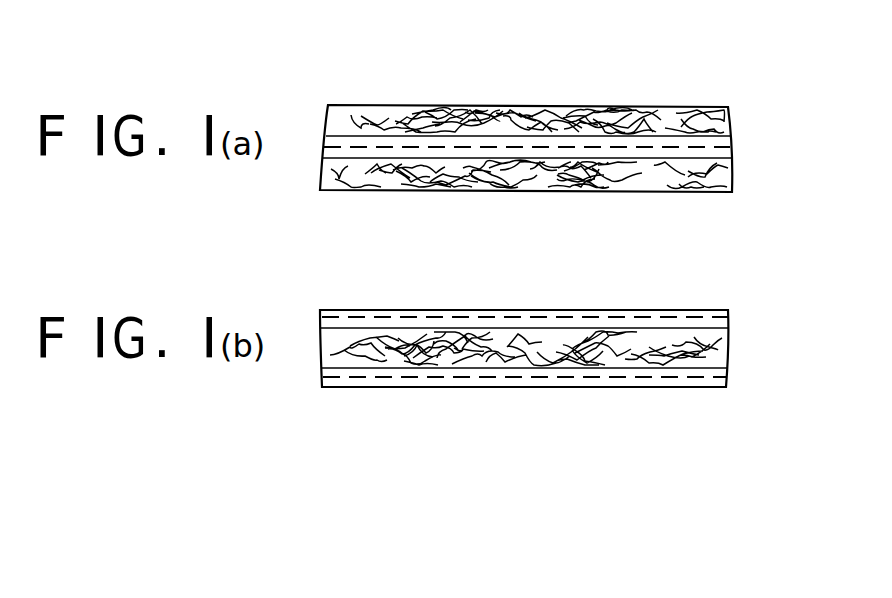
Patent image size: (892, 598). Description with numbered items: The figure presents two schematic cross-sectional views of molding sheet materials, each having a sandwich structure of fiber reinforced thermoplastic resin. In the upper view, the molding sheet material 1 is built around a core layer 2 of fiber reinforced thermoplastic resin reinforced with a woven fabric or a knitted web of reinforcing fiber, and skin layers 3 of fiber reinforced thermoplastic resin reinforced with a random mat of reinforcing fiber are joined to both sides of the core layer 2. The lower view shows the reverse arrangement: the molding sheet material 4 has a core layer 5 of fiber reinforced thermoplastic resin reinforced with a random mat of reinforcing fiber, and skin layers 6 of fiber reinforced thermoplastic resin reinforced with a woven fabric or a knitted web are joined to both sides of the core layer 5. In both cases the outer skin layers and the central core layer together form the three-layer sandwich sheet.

In FIG. 1A, the molding sheet material 1 is at (657, 108).
In FIG. 1A, the core layer 2 is at (732, 151).
In FIG. 1A, the skin layers 3 is at (732, 116).
In FIG. 1B, the molding sheet material 4 is at (637, 310).
In FIG. 1B, the core layer 5 is at (731, 346).
In FIG. 1B, the skin layers 6 is at (731, 318).